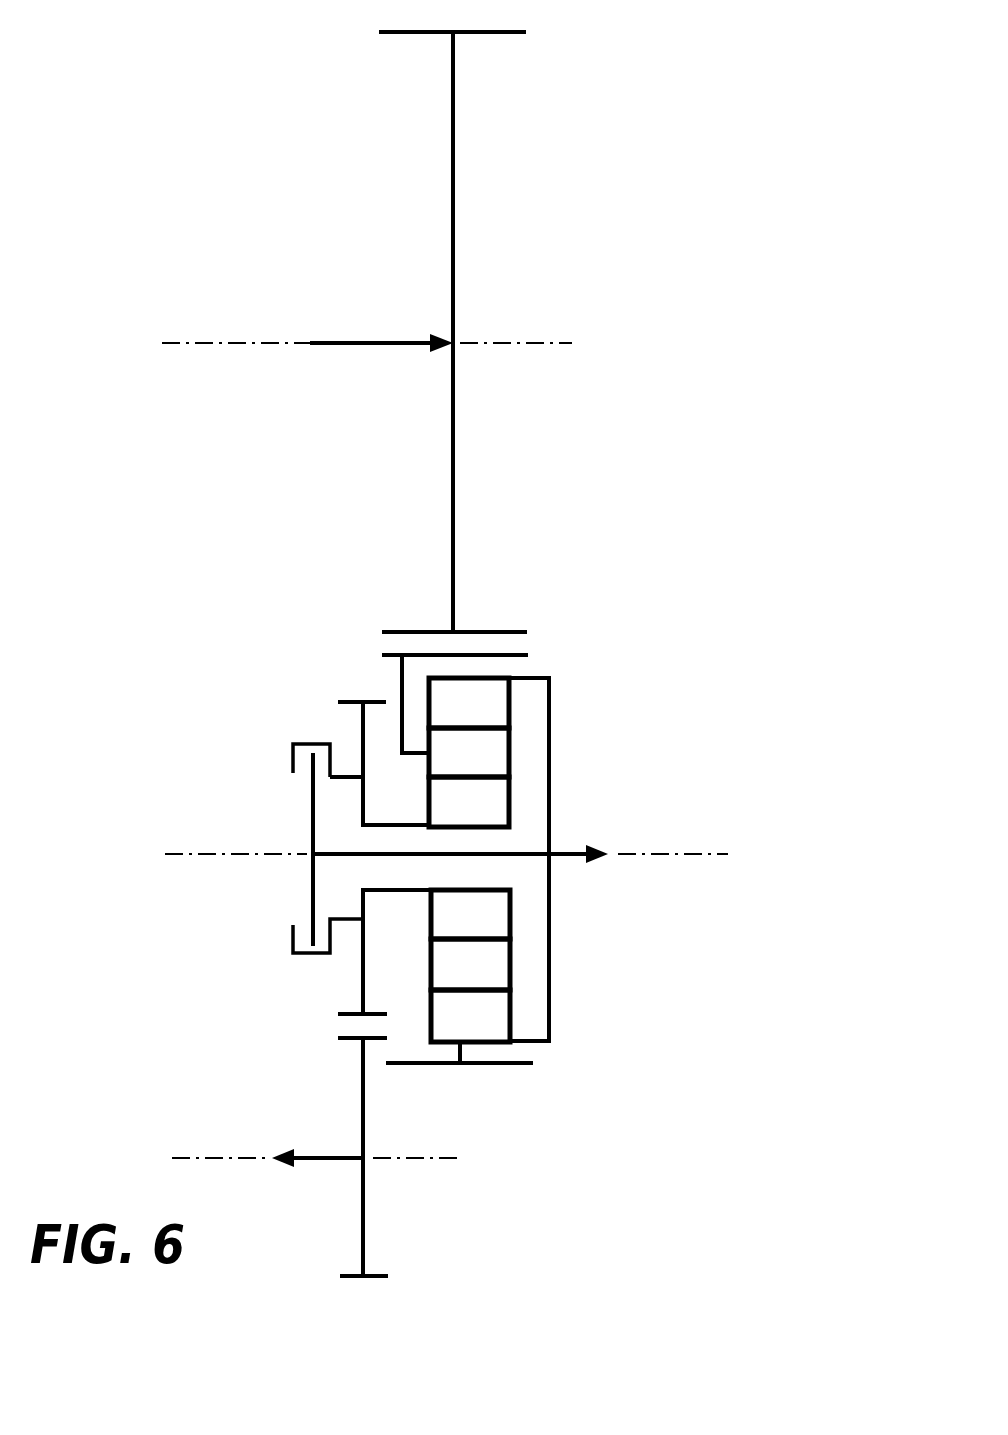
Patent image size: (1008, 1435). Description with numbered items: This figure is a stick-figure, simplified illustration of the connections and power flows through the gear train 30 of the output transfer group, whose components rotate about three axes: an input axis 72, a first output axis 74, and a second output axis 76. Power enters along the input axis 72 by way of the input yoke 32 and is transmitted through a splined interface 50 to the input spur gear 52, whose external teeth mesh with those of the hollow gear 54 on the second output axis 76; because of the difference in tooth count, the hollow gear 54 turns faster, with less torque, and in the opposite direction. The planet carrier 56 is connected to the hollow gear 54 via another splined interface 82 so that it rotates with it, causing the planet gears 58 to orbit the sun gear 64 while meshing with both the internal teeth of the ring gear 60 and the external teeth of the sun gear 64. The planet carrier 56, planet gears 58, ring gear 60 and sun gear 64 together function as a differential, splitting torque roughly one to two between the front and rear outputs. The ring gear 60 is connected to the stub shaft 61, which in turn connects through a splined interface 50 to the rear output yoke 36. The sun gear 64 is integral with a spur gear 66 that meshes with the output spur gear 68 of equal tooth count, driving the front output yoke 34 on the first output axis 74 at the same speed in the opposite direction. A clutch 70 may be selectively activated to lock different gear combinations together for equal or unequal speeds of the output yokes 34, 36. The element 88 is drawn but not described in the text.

The gear train 30 is at (708, 43).
The input yoke 32 is at (369, 340).
The front output yoke 34 is at (316, 1154).
The rear output yoke 36 is at (568, 850).
The splined interface 50 is at (450, 350).
The input spur gear 52 is at (455, 172).
The hollow gear 54 is at (508, 653).
The planet carrier 56 is at (399, 678).
The planet gears 58 is at (457, 763).
The ring gear 60 is at (457, 711).
The stub shaft 61 is at (388, 856).
The sun gear 64 is at (457, 811).
The spur gear 66 is at (362, 982).
The output spur gear 68 is at (366, 1222).
The clutch 70 is at (302, 930).
The input axis 72 is at (510, 340).
The first output axis 74 is at (428, 1155).
The second output axis 76 is at (697, 851).
The splined interface 82 is at (392, 668).
The shaft 88 is at (308, 851).